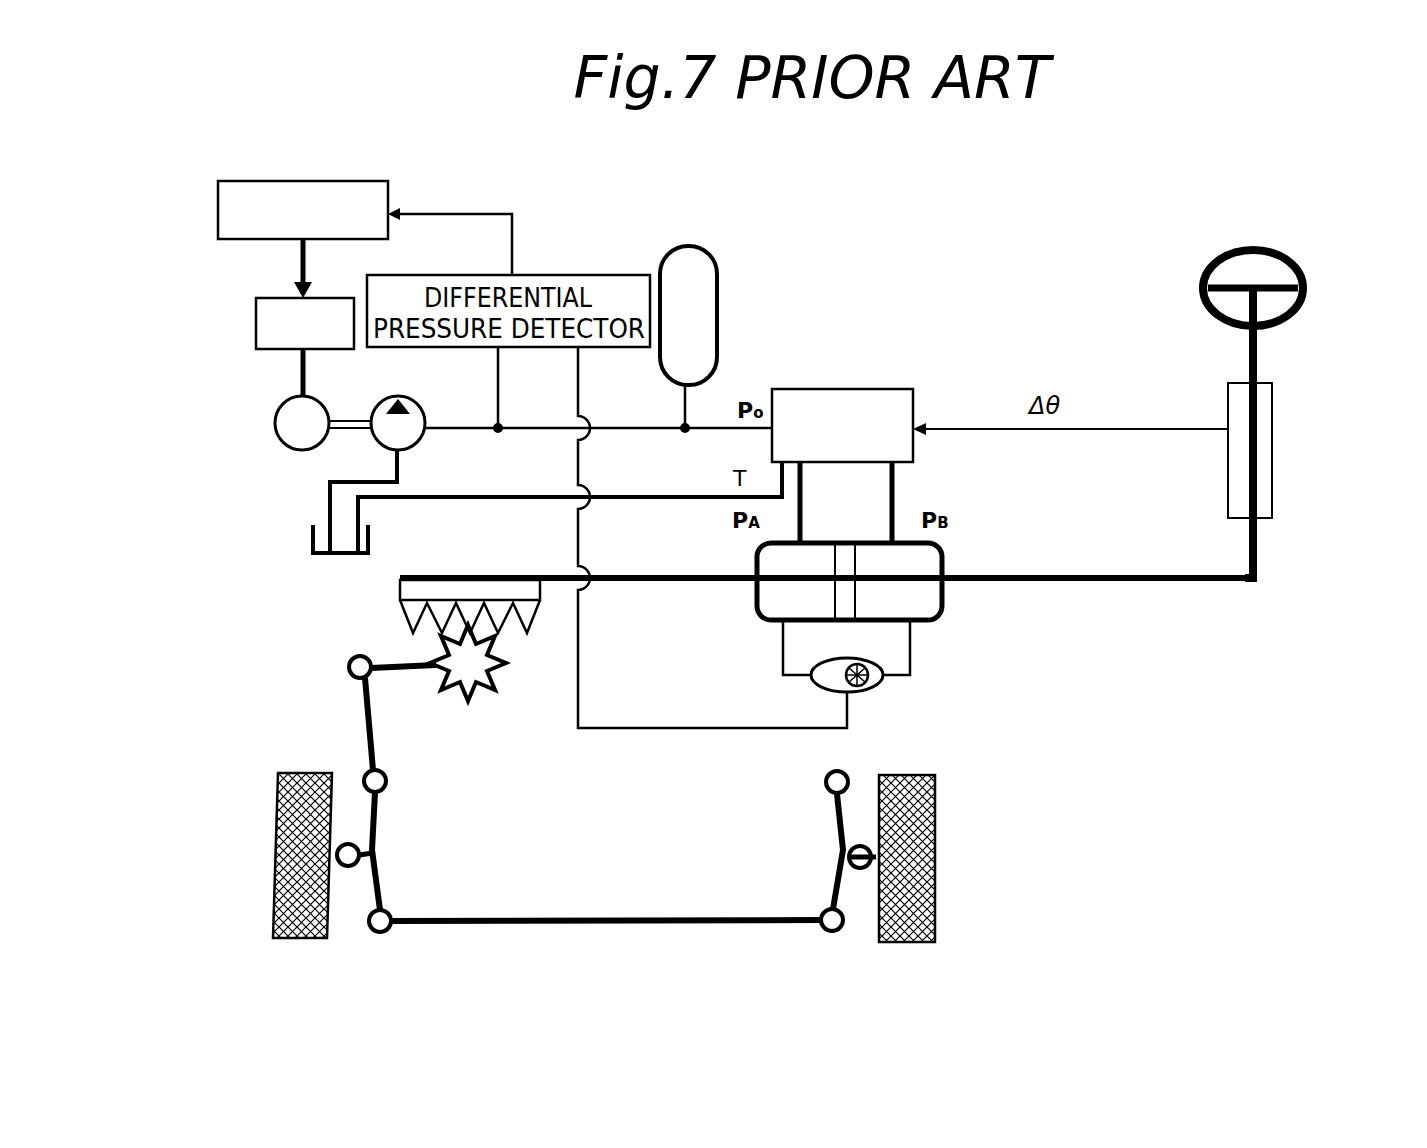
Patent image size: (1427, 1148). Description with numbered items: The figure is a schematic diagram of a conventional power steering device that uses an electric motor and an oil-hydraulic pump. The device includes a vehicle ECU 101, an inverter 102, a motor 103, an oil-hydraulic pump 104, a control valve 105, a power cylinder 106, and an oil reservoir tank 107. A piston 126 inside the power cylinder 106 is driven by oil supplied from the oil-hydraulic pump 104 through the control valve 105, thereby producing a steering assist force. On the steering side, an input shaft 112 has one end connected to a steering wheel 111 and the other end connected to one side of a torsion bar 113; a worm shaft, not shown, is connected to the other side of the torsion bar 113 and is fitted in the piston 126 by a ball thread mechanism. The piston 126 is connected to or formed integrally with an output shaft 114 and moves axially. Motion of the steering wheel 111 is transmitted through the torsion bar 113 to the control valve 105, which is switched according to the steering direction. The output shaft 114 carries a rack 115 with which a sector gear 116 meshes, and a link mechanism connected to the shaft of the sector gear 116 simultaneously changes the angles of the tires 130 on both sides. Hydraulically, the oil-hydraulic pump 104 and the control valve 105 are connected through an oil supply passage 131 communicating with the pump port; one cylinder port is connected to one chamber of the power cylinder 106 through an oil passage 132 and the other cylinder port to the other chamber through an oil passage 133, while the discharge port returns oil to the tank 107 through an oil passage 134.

The vehicle ECU 101 is at (342, 181).
The inverter 102 is at (256, 313).
The motor 103 is at (275, 414).
The oil-hydraulic pump 104 is at (417, 400).
The control valve 105 is at (862, 389).
The power cylinder 106 is at (942, 603).
The oil reservoir tank 107 is at (312, 542).
The steering wheel 111 is at (1288, 257).
The input shaft 112 is at (1258, 363).
The torsion bar 113 is at (1272, 469).
The output shaft 114 is at (660, 575).
The rack 115 is at (397, 590).
The sector gear 116 is at (490, 692).
The piston 126 is at (845, 603).
The tires 130 is at (273, 856).
The oil supply passage 131 is at (605, 427).
The oil passage 132 is at (803, 506).
The oil passage 133 is at (895, 488).
The oil passage 134 is at (612, 496).